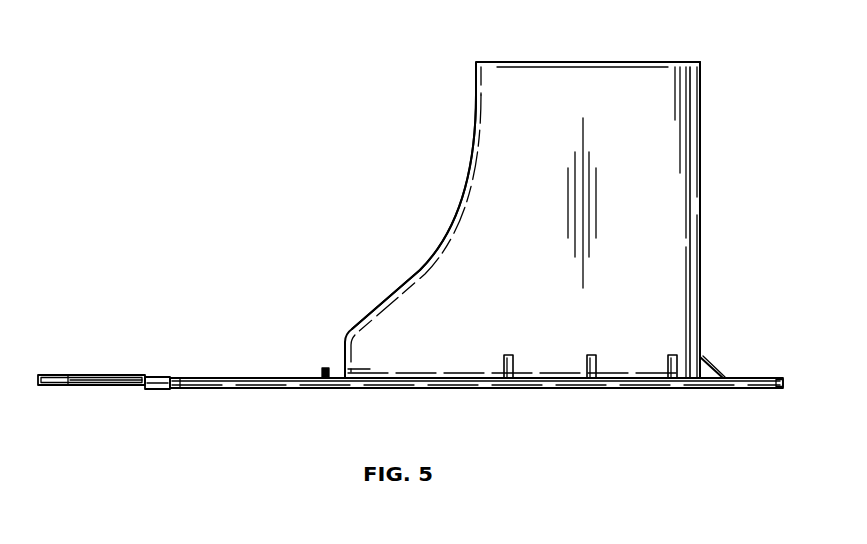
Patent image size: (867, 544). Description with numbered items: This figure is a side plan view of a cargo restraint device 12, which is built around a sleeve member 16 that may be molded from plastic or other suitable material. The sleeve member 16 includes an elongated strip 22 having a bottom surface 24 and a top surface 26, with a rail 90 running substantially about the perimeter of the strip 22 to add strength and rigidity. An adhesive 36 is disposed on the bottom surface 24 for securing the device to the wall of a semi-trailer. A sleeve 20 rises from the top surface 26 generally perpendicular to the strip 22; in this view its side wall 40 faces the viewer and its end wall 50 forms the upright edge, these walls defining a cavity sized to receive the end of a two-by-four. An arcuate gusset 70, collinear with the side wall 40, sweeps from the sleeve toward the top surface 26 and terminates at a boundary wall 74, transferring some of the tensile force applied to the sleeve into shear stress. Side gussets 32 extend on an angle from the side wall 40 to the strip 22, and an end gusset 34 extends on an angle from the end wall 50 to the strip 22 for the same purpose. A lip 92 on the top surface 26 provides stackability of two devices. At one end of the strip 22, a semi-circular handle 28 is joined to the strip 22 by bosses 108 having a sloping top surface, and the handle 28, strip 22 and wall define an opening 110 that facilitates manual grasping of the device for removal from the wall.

The cargo restraint device 12 is at (714, 173).
The sleeve member 16 is at (222, 372).
The sleeve 20 is at (662, 90).
The elongated strip 22 is at (258, 377).
The bottom surface 24 is at (762, 390).
The top surface 26 is at (738, 377).
The handle 28 is at (52, 374).
The side gussets 32 is at (512, 380).
The end gussets 34 is at (704, 360).
The adhesive 36 is at (782, 394).
The side wall 40 is at (558, 203).
The end wall 50 is at (700, 107).
The arcuate gusset 70 is at (420, 266).
The boundary wall 74 is at (343, 380).
The rail 90 is at (190, 389).
The lip 92 is at (328, 367).
The bosses 108 is at (155, 377).
The opening 110 is at (108, 388).